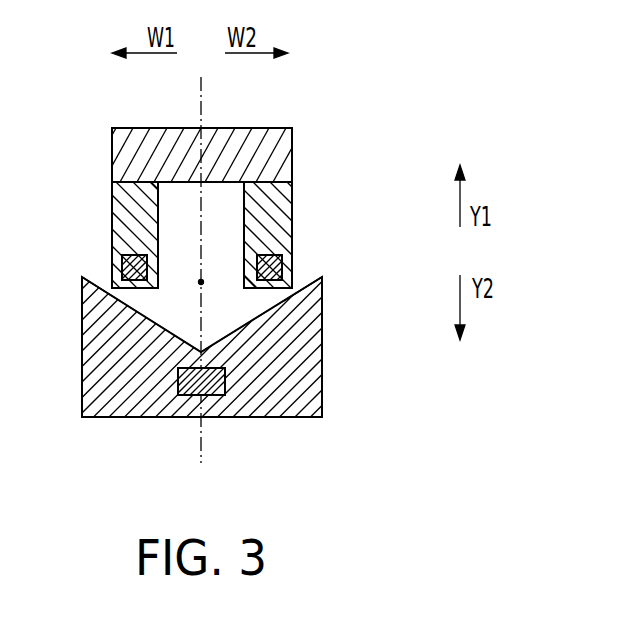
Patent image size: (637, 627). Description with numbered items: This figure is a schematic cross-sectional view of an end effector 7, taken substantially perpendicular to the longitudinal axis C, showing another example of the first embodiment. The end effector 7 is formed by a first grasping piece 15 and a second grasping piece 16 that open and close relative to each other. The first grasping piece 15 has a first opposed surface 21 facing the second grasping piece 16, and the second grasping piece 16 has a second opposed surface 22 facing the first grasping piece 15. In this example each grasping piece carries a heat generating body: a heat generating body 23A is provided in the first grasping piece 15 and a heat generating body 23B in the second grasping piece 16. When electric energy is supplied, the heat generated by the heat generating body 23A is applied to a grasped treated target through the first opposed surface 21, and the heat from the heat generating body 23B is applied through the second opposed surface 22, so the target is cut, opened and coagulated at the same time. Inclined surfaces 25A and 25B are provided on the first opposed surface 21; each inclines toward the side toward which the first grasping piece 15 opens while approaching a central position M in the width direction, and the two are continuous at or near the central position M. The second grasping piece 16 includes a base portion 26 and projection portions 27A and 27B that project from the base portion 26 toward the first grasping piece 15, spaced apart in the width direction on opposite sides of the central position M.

The end effector 7 is at (388, 108).
The first grasping piece 15 is at (338, 389).
The second grasping piece 16 is at (312, 166).
The first opposed surface 21 is at (178, 326).
The second opposed surface 22 is at (160, 299).
The heat generating body 23A is at (217, 382).
The heat generating body 23B is at (118, 256).
The inclined surface 25A is at (112, 295).
The inclined surface 25B is at (311, 286).
The base portion 26 is at (155, 142).
The projection portion 27A is at (125, 194).
The projection portion 27B is at (297, 190).
The central position M is at (204, 103).
The longitudinal axis C is at (203, 284).